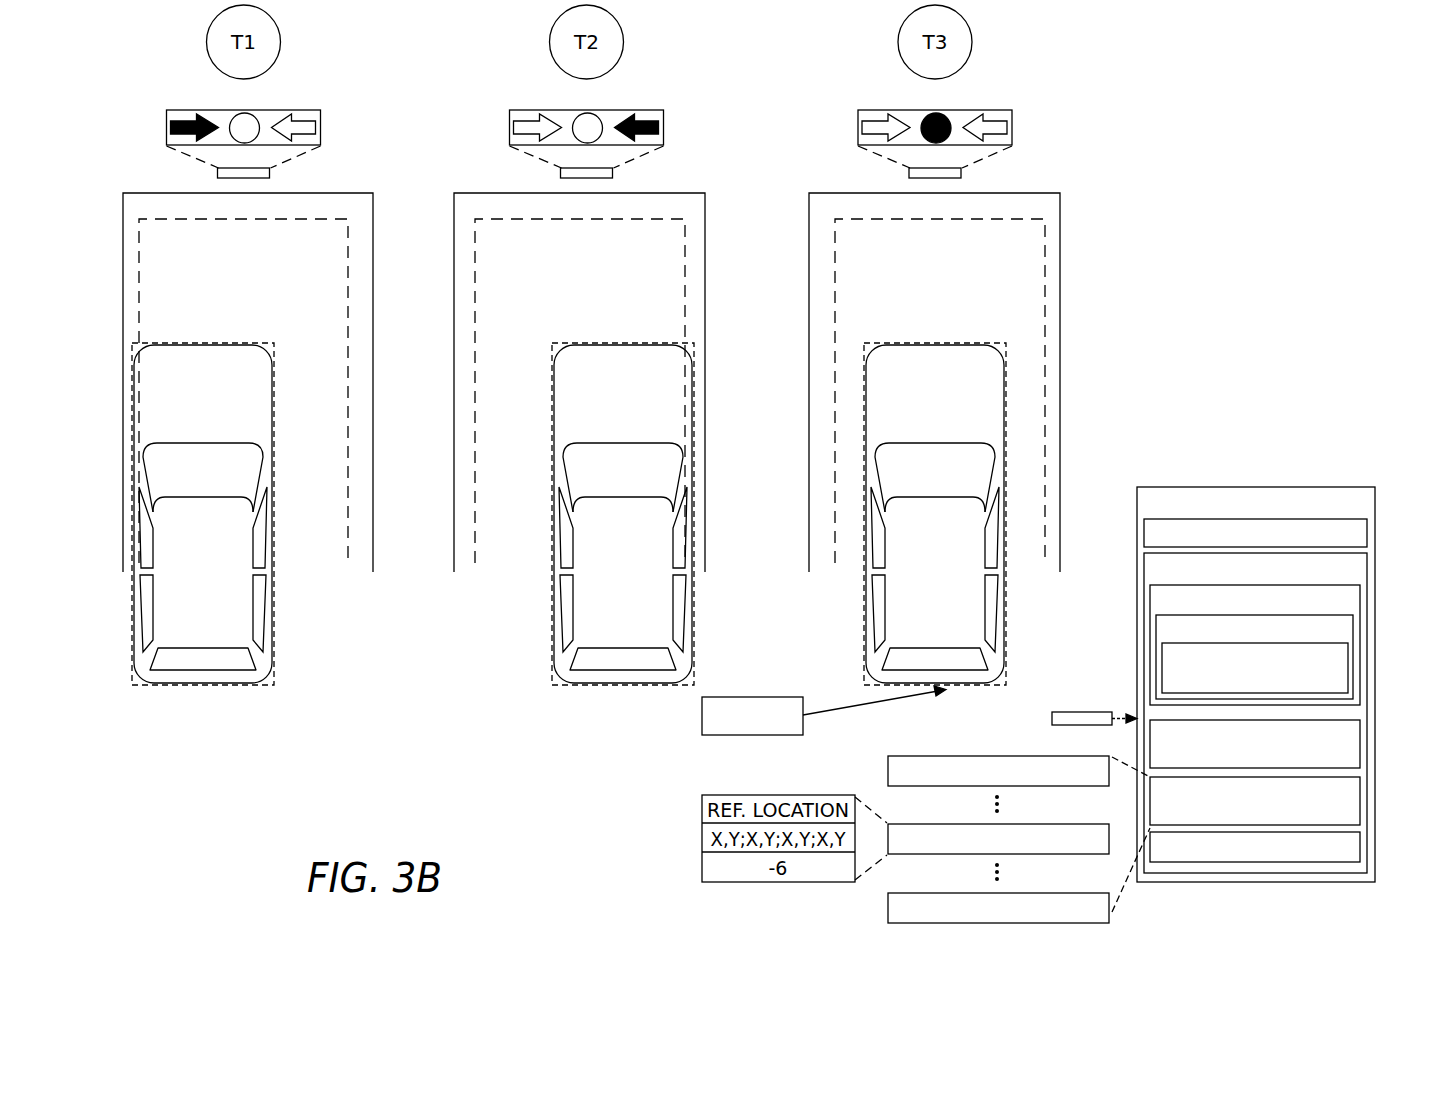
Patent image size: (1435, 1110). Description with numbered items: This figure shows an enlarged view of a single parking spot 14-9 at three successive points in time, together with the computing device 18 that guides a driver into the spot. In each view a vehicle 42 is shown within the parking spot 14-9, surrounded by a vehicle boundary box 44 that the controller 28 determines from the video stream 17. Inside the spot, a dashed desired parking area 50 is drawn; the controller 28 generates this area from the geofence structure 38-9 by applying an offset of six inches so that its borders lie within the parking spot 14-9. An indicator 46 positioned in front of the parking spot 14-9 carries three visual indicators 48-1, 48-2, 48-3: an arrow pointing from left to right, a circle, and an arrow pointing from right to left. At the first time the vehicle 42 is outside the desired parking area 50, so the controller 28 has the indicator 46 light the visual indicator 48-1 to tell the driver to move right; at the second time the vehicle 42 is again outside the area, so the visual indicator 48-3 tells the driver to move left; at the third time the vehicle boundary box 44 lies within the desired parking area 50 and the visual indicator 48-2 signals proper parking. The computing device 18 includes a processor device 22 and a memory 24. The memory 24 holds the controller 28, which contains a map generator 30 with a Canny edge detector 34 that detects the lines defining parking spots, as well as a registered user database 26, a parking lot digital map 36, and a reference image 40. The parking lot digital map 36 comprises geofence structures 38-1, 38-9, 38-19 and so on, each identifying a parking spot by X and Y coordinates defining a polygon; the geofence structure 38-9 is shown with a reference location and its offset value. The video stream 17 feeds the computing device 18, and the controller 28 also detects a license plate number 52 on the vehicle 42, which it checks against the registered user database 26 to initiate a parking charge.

The parking spot 14-9 is at (211, 276).
The video stream 17 is at (1071, 710).
The computing device 18 is at (1375, 503).
The processor device 22 is at (1367, 533).
The memory 24 is at (1367, 572).
The registered user database 26 is at (1360, 742).
The controller 28 is at (1360, 598).
The map generator 30 is at (1353, 628).
The Canny edge detector 34 is at (1348, 668).
The parking lot digital map 36 is at (1360, 800).
The geofence structure 38-1 is at (884, 773).
The geofence structure 38-9 is at (968, 824).
The geofence structure 38-19 is at (885, 909).
The reference image 40 is at (1360, 843).
The vehicle 42 is at (189, 592).
The vehicle boundary box 44 is at (274, 423).
The indicator 46 is at (168, 128).
The visual indicator 48-1 is at (194, 110).
The visual indicator 48-2 is at (244, 112).
The visual indicator 48-3 is at (300, 110).
The desired parking area 50 is at (285, 220).
The license plate number 52 is at (780, 696).